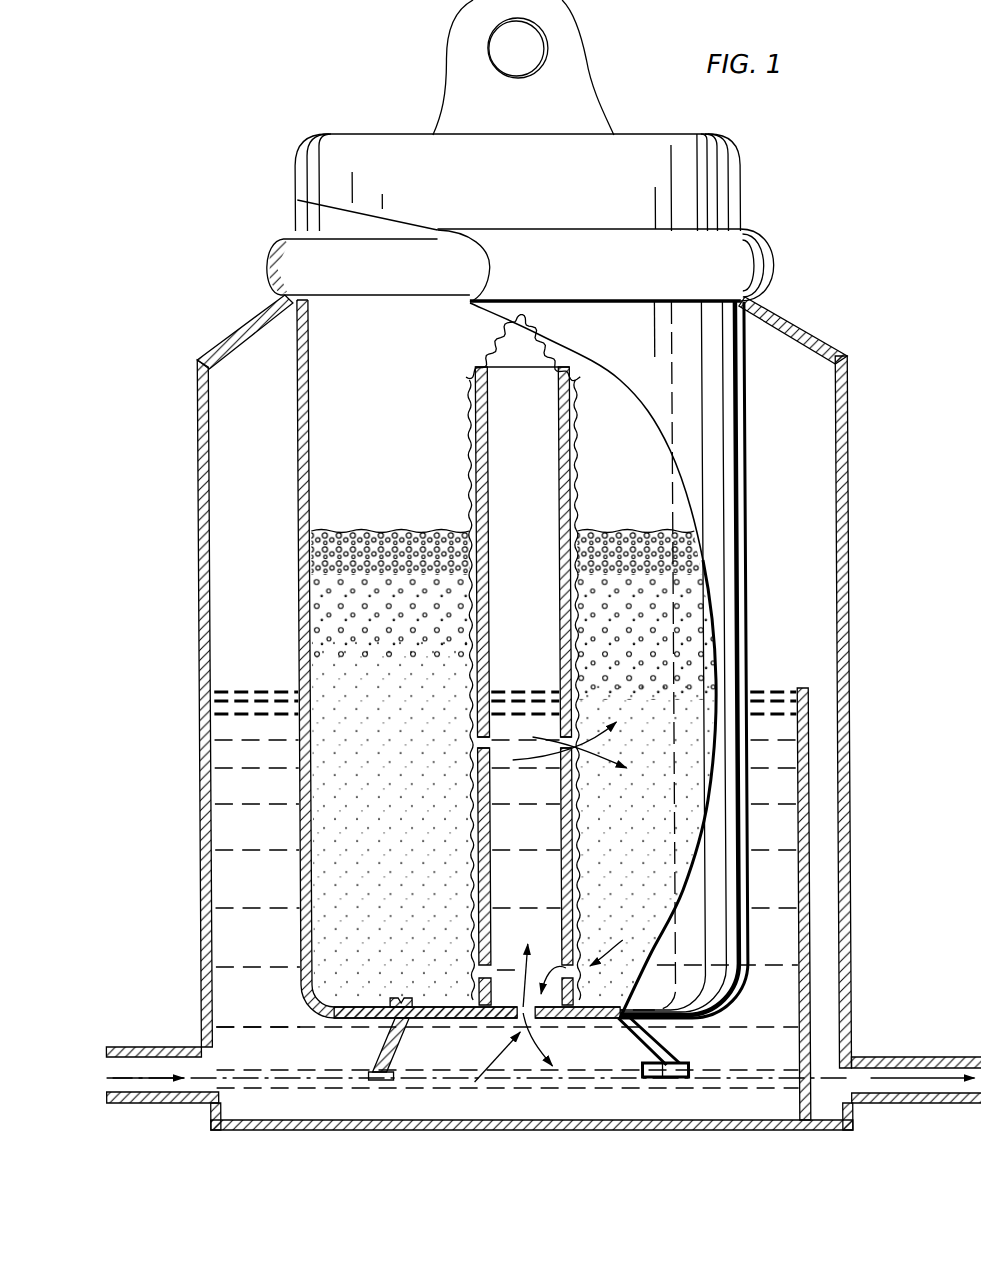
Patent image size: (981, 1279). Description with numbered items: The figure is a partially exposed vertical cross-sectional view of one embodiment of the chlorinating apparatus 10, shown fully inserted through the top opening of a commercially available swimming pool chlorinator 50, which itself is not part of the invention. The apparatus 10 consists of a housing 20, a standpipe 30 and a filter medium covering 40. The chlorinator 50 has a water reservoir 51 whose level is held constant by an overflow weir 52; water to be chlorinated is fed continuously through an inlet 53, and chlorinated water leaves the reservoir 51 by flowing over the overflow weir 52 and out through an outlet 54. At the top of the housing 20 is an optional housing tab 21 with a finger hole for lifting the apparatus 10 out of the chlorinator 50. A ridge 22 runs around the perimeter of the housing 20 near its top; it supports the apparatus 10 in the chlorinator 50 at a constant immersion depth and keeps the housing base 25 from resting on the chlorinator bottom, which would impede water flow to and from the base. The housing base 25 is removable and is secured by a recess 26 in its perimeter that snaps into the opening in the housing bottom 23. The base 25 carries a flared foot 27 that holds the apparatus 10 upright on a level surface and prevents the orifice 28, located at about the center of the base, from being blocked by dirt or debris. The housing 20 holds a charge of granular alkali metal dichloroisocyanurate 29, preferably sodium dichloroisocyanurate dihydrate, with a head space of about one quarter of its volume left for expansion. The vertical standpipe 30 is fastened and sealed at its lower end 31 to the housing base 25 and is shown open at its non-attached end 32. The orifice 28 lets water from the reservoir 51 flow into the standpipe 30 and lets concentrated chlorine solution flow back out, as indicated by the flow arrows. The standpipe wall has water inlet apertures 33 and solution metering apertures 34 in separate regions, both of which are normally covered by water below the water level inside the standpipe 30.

The apparatus 10 is at (323, 160).
The housing 20 is at (303, 452).
The housing tab 21 is at (446, 90).
The ridge 22 is at (274, 245).
The housing bottom 23 is at (326, 1018).
The housing base 25 is at (585, 1018).
The recess 26 is at (392, 1012).
The flared foot 27 is at (384, 1075).
The orifice 28 is at (520, 1012).
The alkali metal dichloroisocyanurate 29 is at (478, 569).
The standpipe 30 is at (477, 679).
The lower end of standpipe 31 is at (478, 1002).
The non-attached end of standpipe 32 is at (510, 367).
The water inlet apertures 33 is at (472, 738).
The solution metering apertures 34 is at (478, 975).
The filter medium covering 40 is at (477, 617).
The chlorinator 50 is at (205, 697).
The water reservoir 51 is at (244, 792).
The overflow weir 52 is at (808, 717).
The inlet 53 is at (180, 1053).
The outlet 54 is at (868, 1058).